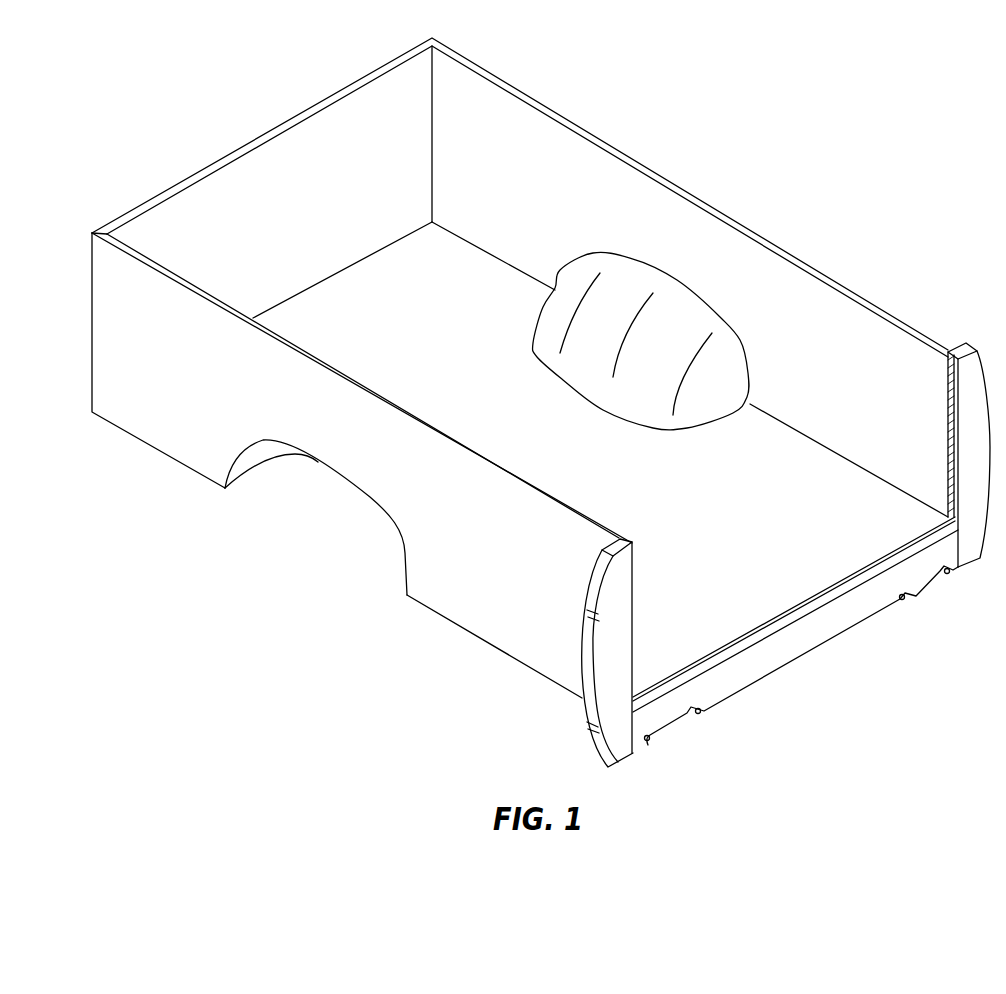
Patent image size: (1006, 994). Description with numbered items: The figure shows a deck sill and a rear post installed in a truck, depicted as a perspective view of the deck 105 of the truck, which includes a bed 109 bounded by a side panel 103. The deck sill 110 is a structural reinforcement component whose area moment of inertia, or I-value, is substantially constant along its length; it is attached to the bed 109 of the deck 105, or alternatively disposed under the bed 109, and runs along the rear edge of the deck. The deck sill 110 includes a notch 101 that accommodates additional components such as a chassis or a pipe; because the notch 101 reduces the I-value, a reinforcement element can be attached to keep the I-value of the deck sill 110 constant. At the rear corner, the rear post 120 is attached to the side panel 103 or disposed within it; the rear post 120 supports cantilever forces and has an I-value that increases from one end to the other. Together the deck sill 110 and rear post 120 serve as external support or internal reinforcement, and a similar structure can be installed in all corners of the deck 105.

The deck 105 is at (758, 160).
The side panel 103 is at (803, 273).
The bed 109 is at (780, 445).
The rear post 120 is at (948, 412).
The notch 101 is at (923, 577).
The deck sill 110 is at (827, 637).